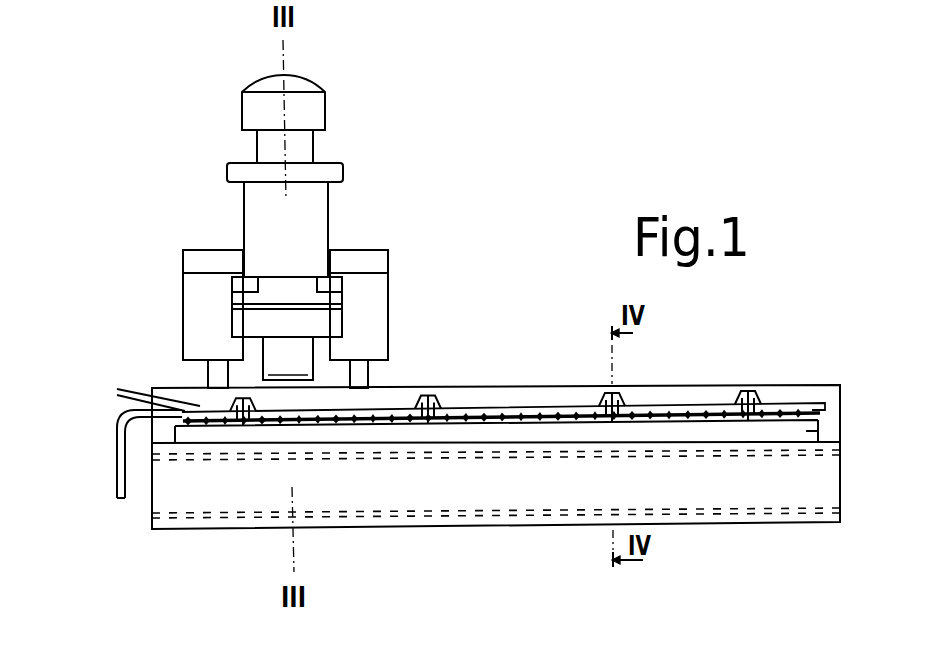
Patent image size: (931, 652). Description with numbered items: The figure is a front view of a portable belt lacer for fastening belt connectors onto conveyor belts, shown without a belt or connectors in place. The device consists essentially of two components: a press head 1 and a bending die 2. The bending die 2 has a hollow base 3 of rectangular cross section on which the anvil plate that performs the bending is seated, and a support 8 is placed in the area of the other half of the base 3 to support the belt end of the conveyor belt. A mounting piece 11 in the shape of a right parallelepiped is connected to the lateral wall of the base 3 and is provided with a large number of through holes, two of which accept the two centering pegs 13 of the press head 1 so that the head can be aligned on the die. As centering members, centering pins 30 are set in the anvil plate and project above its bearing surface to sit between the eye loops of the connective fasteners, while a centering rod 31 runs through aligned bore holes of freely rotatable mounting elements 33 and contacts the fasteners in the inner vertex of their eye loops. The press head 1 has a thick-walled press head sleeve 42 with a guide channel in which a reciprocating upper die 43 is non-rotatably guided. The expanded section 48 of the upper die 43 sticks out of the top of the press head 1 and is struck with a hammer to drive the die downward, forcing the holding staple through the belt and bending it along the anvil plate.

The press head 1 is at (418, 193).
The bending die 2 is at (479, 371).
The hollow base 3 is at (163, 495).
The support 8 is at (808, 432).
The mounting piece 11 is at (821, 392).
The centering pegs 13 is at (212, 375).
The centering pins 30 is at (143, 393).
The centering rod 31 is at (121, 481).
The mounting elements 33 is at (244, 427).
The press head sleeve 42 is at (275, 357).
The upper die 43 is at (257, 150).
The expanded section 48 is at (321, 97).